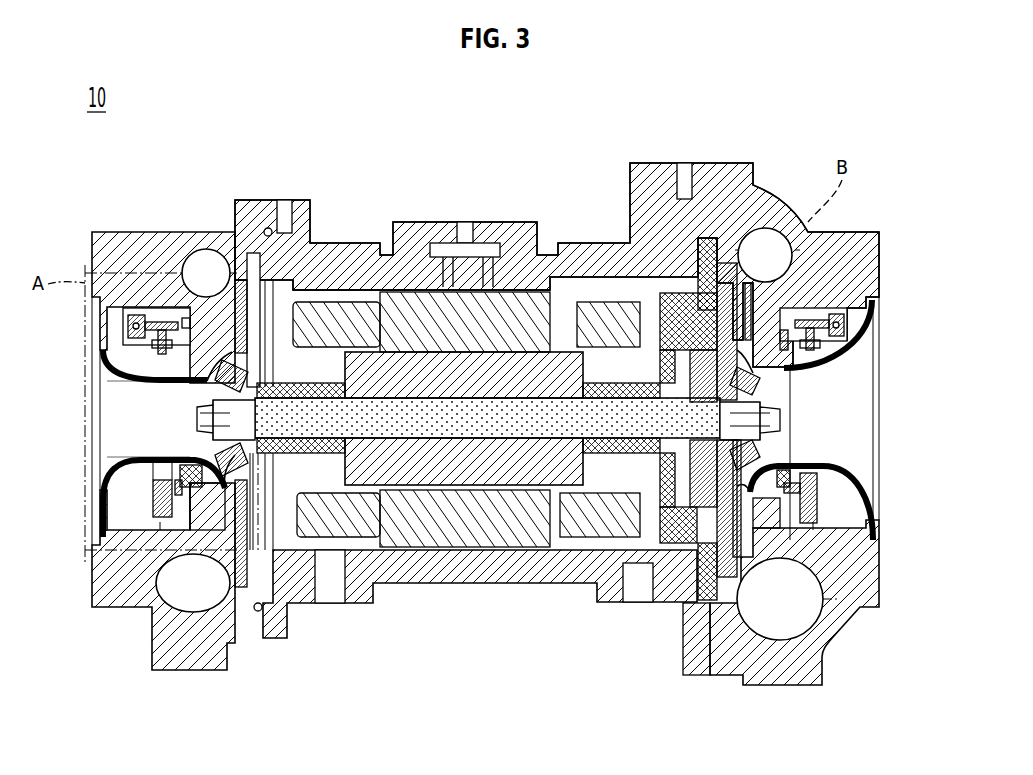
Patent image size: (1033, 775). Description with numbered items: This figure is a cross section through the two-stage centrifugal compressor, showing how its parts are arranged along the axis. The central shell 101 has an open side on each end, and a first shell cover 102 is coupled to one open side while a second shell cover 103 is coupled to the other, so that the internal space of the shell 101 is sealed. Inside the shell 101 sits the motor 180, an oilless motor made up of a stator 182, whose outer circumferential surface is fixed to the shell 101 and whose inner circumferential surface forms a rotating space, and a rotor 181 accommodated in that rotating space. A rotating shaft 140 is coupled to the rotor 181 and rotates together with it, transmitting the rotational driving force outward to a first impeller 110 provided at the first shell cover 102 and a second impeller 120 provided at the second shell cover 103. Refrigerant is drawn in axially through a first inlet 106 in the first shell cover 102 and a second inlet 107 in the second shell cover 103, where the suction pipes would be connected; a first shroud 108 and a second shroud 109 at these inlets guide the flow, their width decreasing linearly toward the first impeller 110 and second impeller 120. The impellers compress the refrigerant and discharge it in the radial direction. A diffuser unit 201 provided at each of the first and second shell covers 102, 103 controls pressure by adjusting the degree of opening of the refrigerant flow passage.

The shell 101 is at (365, 243).
The first shell cover 102 is at (812, 668).
The second shell cover 103 is at (157, 640).
The first inlet 106 is at (850, 445).
The second inlet 107 is at (115, 416).
The first shroud 108 is at (873, 316).
The second shroud 109 is at (100, 512).
The first impeller 110 is at (745, 370).
The second impeller 120 is at (155, 482).
The rotating shaft 140 is at (305, 413).
The motor 180 is at (652, 296).
The rotor 181 is at (427, 462).
The stator 182 is at (492, 510).
The diffuser unit 201 is at (163, 519).